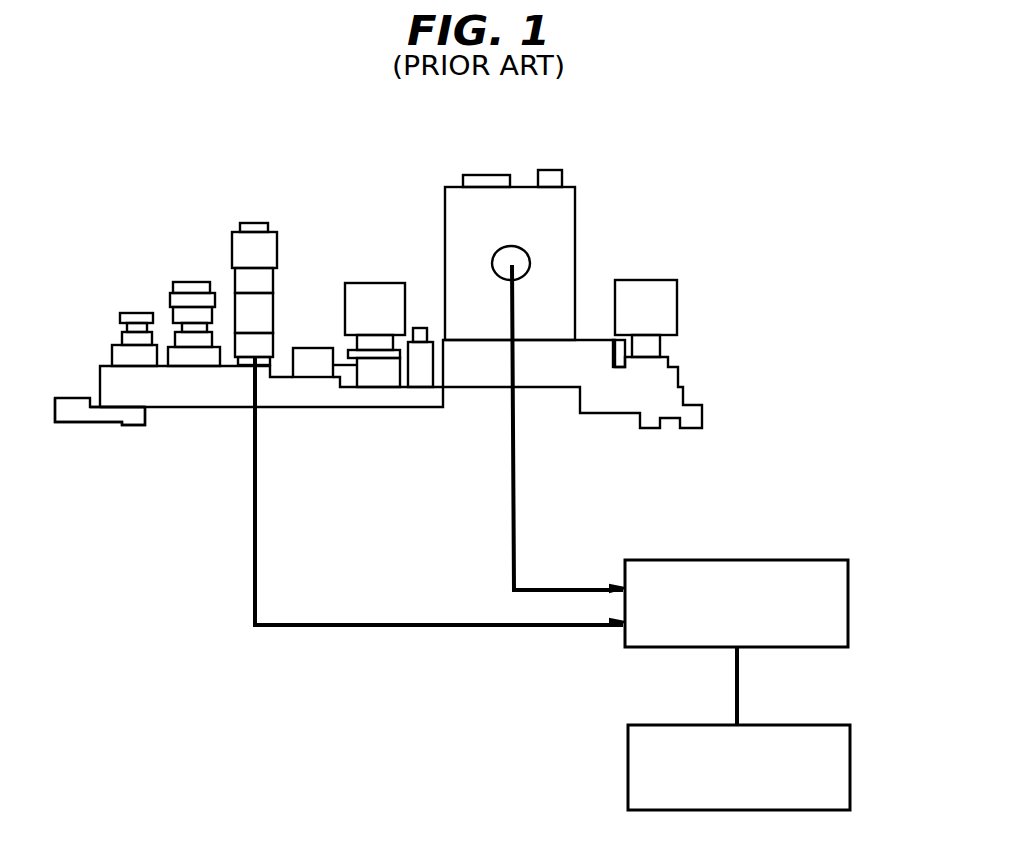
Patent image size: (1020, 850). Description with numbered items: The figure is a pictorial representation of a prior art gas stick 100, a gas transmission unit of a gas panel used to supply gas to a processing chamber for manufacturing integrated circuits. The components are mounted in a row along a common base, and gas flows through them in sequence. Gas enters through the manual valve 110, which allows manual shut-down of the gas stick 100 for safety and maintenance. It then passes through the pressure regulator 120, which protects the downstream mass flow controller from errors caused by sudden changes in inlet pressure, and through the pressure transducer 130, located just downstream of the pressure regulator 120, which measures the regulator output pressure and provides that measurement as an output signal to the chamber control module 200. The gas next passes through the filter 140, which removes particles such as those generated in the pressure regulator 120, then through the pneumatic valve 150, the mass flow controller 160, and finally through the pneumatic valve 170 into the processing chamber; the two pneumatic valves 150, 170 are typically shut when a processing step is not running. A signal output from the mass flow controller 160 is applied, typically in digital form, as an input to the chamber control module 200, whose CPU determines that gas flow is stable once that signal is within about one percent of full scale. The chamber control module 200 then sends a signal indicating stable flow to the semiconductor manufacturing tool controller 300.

The gas stick 100 is at (529, 108).
The manual valve 110 is at (130, 426).
The pressure regulator 120 is at (187, 281).
The pressure transducer 130 is at (252, 223).
The filter 140 is at (305, 379).
The pneumatic valve 150 is at (370, 283).
The mass flow controller 160 is at (480, 389).
The pneumatic valve 170 is at (642, 279).
The chamber control module 200 is at (852, 590).
The semiconductor manufacturing tool controller 300 is at (853, 757).